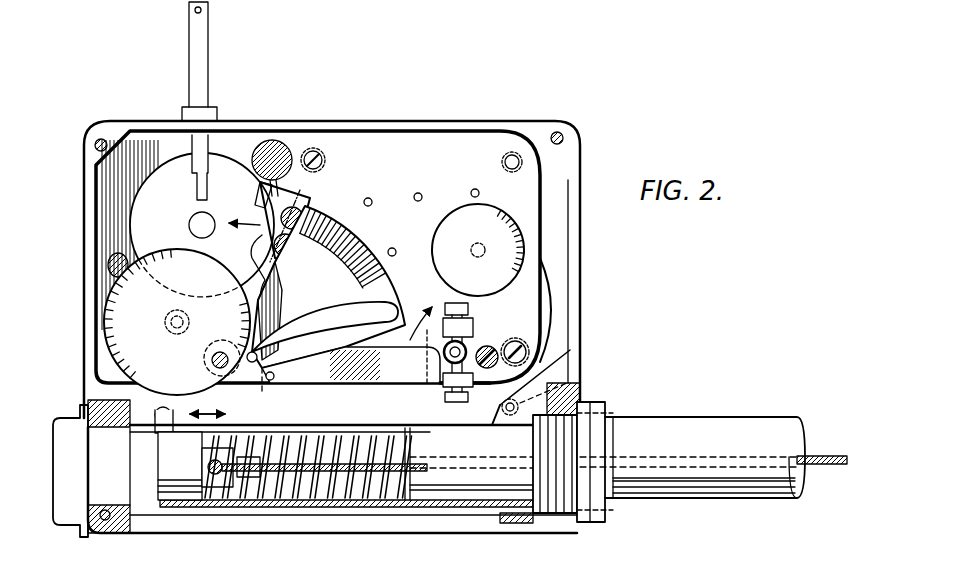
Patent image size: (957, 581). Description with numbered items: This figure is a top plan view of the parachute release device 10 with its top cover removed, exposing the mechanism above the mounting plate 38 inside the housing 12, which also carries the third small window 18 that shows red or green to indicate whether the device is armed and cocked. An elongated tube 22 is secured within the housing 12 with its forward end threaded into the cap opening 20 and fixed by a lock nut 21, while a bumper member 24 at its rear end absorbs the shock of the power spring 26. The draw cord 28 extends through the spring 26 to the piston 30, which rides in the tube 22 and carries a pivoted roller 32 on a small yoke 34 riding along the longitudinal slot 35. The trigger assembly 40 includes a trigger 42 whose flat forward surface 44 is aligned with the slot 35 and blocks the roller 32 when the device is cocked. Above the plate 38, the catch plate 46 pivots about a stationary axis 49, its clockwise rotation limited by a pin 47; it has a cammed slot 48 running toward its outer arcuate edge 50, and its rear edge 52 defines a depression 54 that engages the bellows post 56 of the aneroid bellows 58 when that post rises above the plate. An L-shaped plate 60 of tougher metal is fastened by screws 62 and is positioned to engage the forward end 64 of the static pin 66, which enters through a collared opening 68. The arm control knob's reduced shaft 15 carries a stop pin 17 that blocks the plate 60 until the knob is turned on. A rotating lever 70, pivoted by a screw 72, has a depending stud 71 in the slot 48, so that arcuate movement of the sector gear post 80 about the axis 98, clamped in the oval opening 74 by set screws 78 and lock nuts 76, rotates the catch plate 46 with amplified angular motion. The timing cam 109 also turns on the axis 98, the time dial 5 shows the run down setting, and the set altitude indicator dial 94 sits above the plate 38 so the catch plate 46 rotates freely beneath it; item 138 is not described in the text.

The time dial 5 is at (493, 210).
The parachute release device 10 is at (442, 118).
The housing 12 is at (495, 119).
The reduced shaft 15 is at (272, 140).
The stop pin 17 is at (258, 182).
The third small window 18 is at (347, 204).
The cap opening 20 is at (553, 523).
The lock nut 21 is at (598, 527).
The elongated tube 22 is at (463, 494).
The bumper member 24 is at (148, 513).
The power spring 26 is at (343, 500).
The automatic parachute draw cord 28 is at (825, 455).
The piston 30 is at (188, 498).
The pivoted roller 32 is at (568, 380).
The yoke 34 is at (166, 433).
The longitudinal slot 35 is at (302, 433).
The mounting plate 38 is at (385, 150).
The trigger assembly 40 is at (483, 412).
The trigger 42 is at (480, 398).
The flat forward surface 44 is at (570, 365).
The catch plate 46 is at (335, 264).
The pin 47 is at (270, 381).
The cammed slot 48 is at (312, 318).
The stationary axis 49 is at (204, 358).
The outer arcuate edge 50 is at (399, 293).
The rear edge 52 is at (262, 298).
The depression 54 is at (262, 236).
The bellows post 56 is at (190, 222).
The aneroid bellows 58 is at (168, 157).
The L-shaped plate 60 is at (308, 198).
The screws 62 is at (303, 249).
The forward end 64 is at (197, 187).
The static pin 66 is at (189, 37).
The collared opening 68 is at (217, 112).
The rotating lever 70 is at (370, 385).
The depending stud 71 is at (258, 350).
The screw 72 is at (490, 348).
The oval opening 74 is at (468, 338).
The lock nuts 76 is at (467, 319).
The set screws 78 is at (445, 306).
The sector gear post 80 is at (444, 352).
The set altitude indicator dial 94 is at (112, 328).
The sector gear axis 98 is at (523, 341).
The timing cam 109 is at (557, 300).
The hole 138 is at (372, 201).